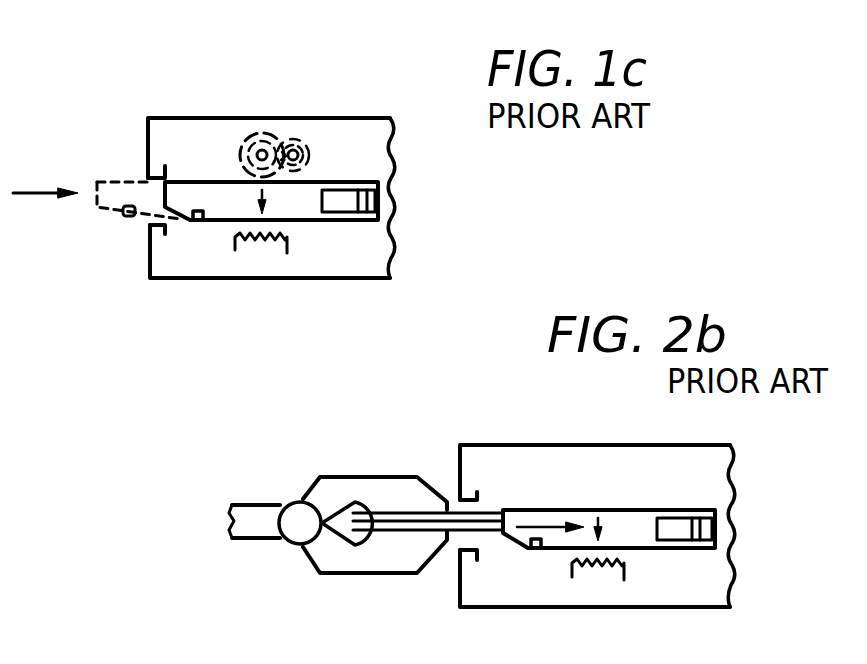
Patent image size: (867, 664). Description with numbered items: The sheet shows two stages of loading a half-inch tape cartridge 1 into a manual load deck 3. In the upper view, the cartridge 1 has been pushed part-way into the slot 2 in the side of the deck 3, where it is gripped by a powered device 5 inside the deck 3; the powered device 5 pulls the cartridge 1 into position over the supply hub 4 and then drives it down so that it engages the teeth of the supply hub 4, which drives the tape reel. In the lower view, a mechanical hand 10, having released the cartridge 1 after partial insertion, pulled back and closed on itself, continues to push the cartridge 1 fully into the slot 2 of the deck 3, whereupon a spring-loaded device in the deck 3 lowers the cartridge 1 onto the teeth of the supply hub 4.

In FIG. 1c, the cartridge 1 is at (360, 182).
In FIG. 2b, the cartridge 1 is at (518, 508).
In FIG. 1c, the slot 2 is at (152, 172).
In FIG. 2b, the slot 2 is at (453, 547).
In FIG. 1c, the manual load deck 3 is at (393, 120).
In FIG. 2b, the manual load deck 3 is at (582, 455).
In FIG. 1c, the supply hub 4 is at (247, 249).
In FIG. 2b, the supply hub 4 is at (570, 572).
In FIG. 1c, the powered device 5 is at (283, 150).
In FIG. 2b, the mechanical hand 10 is at (365, 483).